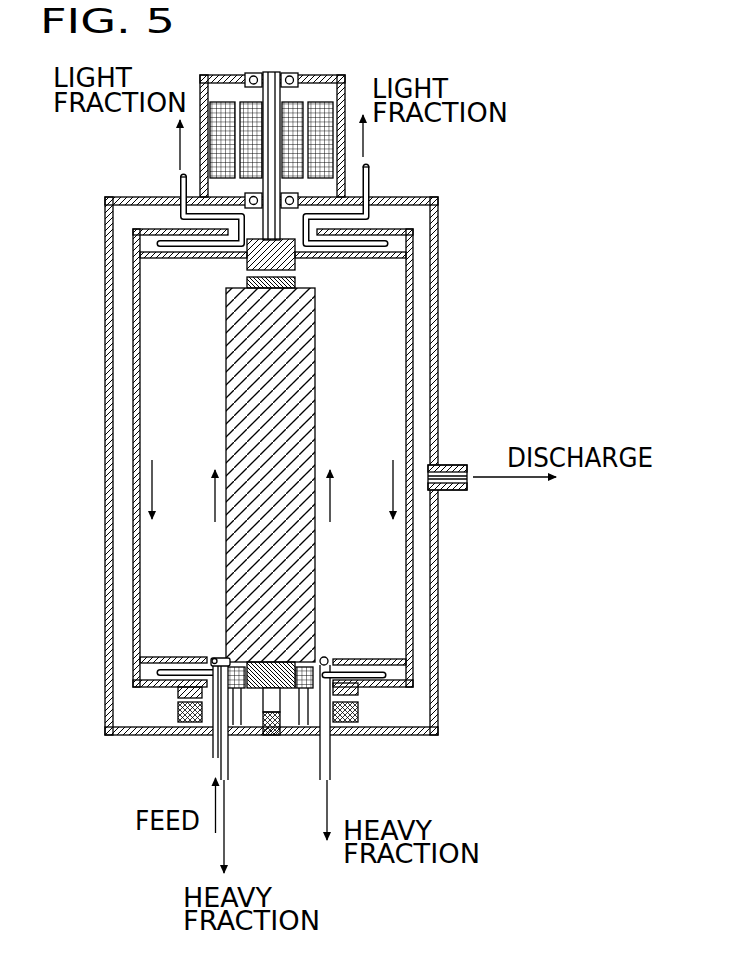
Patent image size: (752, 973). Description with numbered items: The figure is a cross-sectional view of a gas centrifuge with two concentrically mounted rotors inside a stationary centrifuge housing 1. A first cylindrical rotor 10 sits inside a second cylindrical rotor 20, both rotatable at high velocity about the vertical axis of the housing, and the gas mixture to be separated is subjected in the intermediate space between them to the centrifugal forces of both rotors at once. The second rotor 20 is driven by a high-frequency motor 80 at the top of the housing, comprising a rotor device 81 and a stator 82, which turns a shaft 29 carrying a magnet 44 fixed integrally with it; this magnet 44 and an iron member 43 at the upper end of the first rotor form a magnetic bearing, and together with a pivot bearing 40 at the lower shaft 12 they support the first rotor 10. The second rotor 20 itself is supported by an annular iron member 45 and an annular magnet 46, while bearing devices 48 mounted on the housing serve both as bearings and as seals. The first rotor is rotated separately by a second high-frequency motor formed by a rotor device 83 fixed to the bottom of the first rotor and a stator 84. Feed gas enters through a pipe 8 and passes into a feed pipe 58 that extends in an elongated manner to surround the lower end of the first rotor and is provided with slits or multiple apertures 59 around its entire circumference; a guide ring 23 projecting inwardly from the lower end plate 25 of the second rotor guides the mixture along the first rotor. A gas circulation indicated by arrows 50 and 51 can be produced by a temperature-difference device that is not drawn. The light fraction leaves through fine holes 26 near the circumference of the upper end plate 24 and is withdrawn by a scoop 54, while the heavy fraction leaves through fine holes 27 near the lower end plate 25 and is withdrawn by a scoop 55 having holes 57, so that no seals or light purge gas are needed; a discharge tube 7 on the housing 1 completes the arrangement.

The centrifuge housing 1 is at (438, 352).
The discharge tube 7 is at (455, 465).
The pipe 8 is at (213, 752).
The first cylindrical rotor 10 is at (315, 418).
The lower shaft 12 is at (270, 705).
The second cylindrical rotor 20 is at (406, 392).
The guide ring 23 is at (347, 660).
The upper end plate 24 is at (336, 258).
The lower end plate 25 is at (200, 658).
The fine holes 26 is at (360, 262).
The fine holes 27 is at (160, 657).
The shaft 29 is at (270, 70).
The pivot bearing 40 is at (272, 735).
The iron member 43 is at (247, 283).
The magnet 44 is at (247, 262).
The annular iron member 45 is at (178, 692).
The annular magnet 46 is at (183, 723).
The bearing devices 48 is at (250, 73).
The arrows 50 is at (214, 518).
The arrows 51 is at (156, 492).
The scoop 54 is at (383, 240).
The scoop 55 is at (365, 678).
The holes 57 is at (381, 256).
The feed pipe 58 is at (325, 658).
The slits or multiple apertures 59 is at (213, 658).
The high-frequency motor 80 is at (323, 95).
The rotor device 81 is at (294, 103).
The stator 82 is at (328, 103).
The rotor device 83 is at (297, 690).
The stator 84 is at (232, 685).